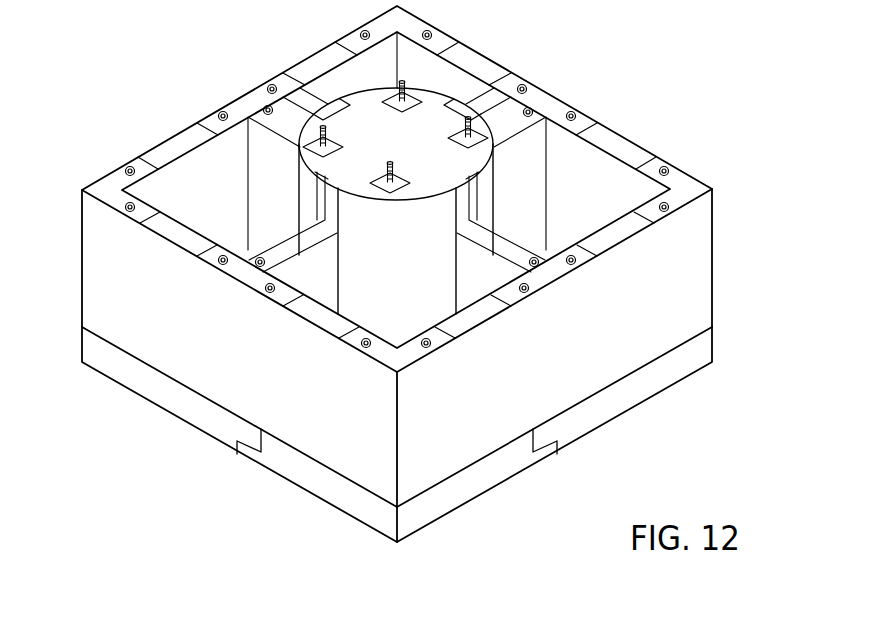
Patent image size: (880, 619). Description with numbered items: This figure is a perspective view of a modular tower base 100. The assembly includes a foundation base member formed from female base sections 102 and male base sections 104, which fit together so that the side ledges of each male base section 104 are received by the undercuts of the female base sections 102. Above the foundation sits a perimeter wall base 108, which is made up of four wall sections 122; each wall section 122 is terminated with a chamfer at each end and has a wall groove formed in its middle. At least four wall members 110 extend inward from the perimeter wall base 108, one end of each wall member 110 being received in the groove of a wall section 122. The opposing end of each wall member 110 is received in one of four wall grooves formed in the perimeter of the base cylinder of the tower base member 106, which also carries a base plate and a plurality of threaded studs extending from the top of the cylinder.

The modular tower base 100 is at (157, 7).
The female base section 102 is at (108, 360).
The male base section 104 is at (283, 465).
The tower base member 106 is at (438, 100).
The perimeter wall base 108 is at (167, 343).
The wall member 110 is at (527, 162).
The wall section 122 is at (463, 442).